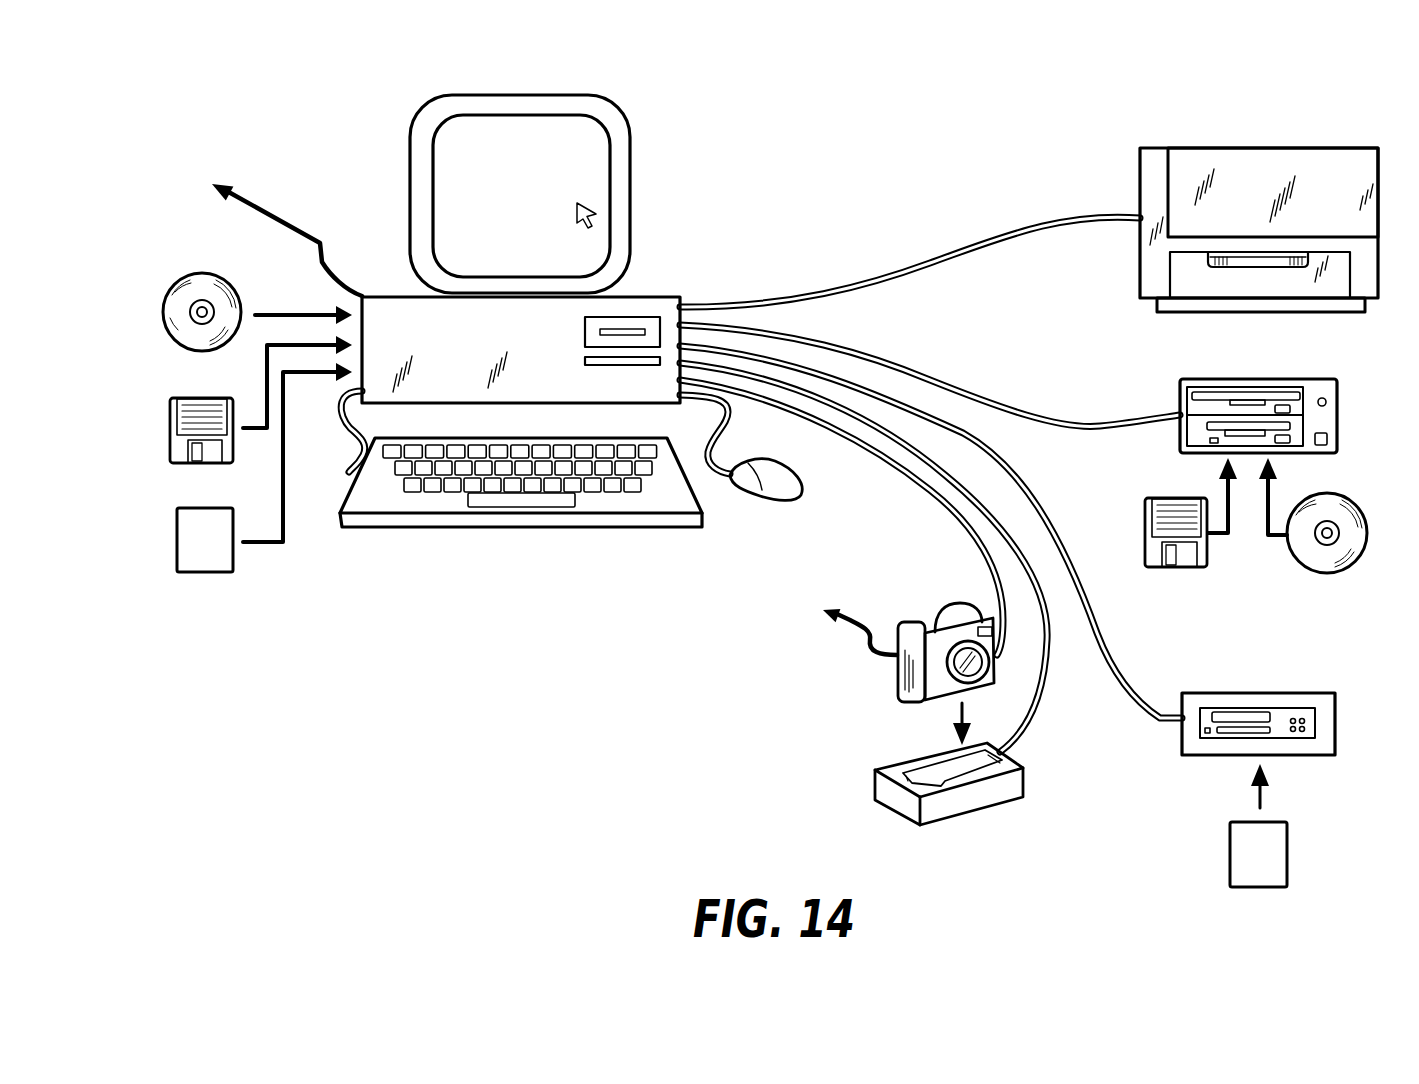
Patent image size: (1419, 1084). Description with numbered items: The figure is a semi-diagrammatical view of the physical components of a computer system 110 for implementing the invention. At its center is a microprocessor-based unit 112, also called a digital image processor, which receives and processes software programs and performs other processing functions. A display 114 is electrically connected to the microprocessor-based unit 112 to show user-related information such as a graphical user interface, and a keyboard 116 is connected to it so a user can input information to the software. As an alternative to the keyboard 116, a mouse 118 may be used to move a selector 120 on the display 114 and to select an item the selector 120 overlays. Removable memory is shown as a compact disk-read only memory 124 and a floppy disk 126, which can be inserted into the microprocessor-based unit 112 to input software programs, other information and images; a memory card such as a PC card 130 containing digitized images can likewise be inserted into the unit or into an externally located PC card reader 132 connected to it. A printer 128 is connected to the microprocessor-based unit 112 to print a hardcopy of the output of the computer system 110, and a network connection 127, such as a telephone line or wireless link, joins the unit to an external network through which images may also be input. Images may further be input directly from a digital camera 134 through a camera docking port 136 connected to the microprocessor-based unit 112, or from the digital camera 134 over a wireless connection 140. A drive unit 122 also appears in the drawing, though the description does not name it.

The computer system 110 is at (290, 115).
The microprocessor-based unit 112 is at (393, 296).
The display 114 is at (427, 107).
The keyboard 116 is at (437, 527).
The mouse 118 is at (748, 490).
The selector 120 is at (597, 208).
The disk drive unit 122 is at (1338, 409).
The compact disk-read only memory (CD-ROM) 124 is at (165, 312).
The floppy disk 126 is at (168, 432).
The network connection 127 is at (263, 208).
The printer 128 is at (1243, 148).
The PC card 130 is at (175, 546).
The PC card reader 132 is at (1338, 719).
The digital camera 134 is at (947, 603).
The camera docking port 136 is at (875, 783).
The wireless connection 140 is at (855, 648).